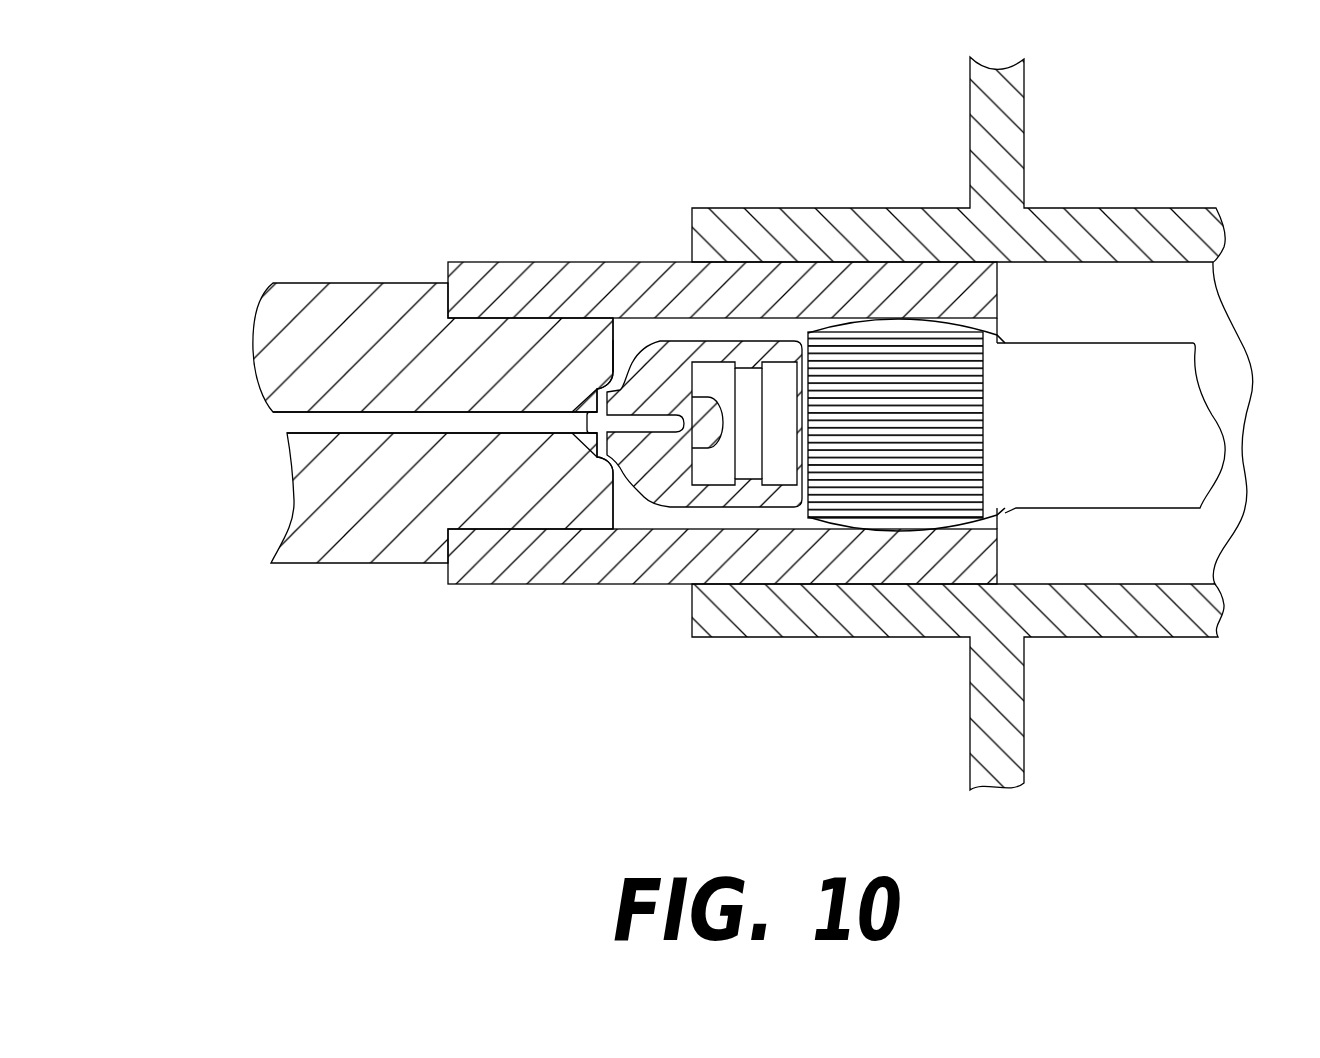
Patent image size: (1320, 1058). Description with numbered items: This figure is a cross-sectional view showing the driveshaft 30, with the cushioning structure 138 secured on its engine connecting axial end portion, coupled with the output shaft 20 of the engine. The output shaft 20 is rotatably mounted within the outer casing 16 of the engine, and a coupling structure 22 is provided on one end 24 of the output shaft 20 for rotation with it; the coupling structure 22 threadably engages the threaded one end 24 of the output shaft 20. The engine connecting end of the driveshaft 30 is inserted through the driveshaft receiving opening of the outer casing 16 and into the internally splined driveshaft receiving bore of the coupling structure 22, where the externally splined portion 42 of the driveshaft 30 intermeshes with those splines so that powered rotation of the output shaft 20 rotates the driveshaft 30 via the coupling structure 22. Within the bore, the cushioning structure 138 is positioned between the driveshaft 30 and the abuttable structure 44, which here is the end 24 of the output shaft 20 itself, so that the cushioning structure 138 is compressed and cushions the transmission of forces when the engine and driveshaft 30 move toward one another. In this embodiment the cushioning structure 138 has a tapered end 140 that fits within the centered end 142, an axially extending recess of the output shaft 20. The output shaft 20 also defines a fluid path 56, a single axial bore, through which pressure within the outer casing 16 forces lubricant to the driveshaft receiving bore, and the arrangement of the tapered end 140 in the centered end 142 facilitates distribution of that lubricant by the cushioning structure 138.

The outer casing 16 is at (1008, 125).
The output shaft 20 is at (322, 532).
The coupling structure 22 is at (487, 290).
The one end of the output shaft 24 is at (497, 518).
The driveshaft 30 is at (1176, 383).
The splined portion 42 is at (898, 330).
The abuttable structure 44 is at (615, 343).
The fluid path 56 is at (302, 423).
The cushioning structure 138 is at (693, 510).
The tapered end 140 is at (613, 374).
The centered end 142 is at (610, 466).